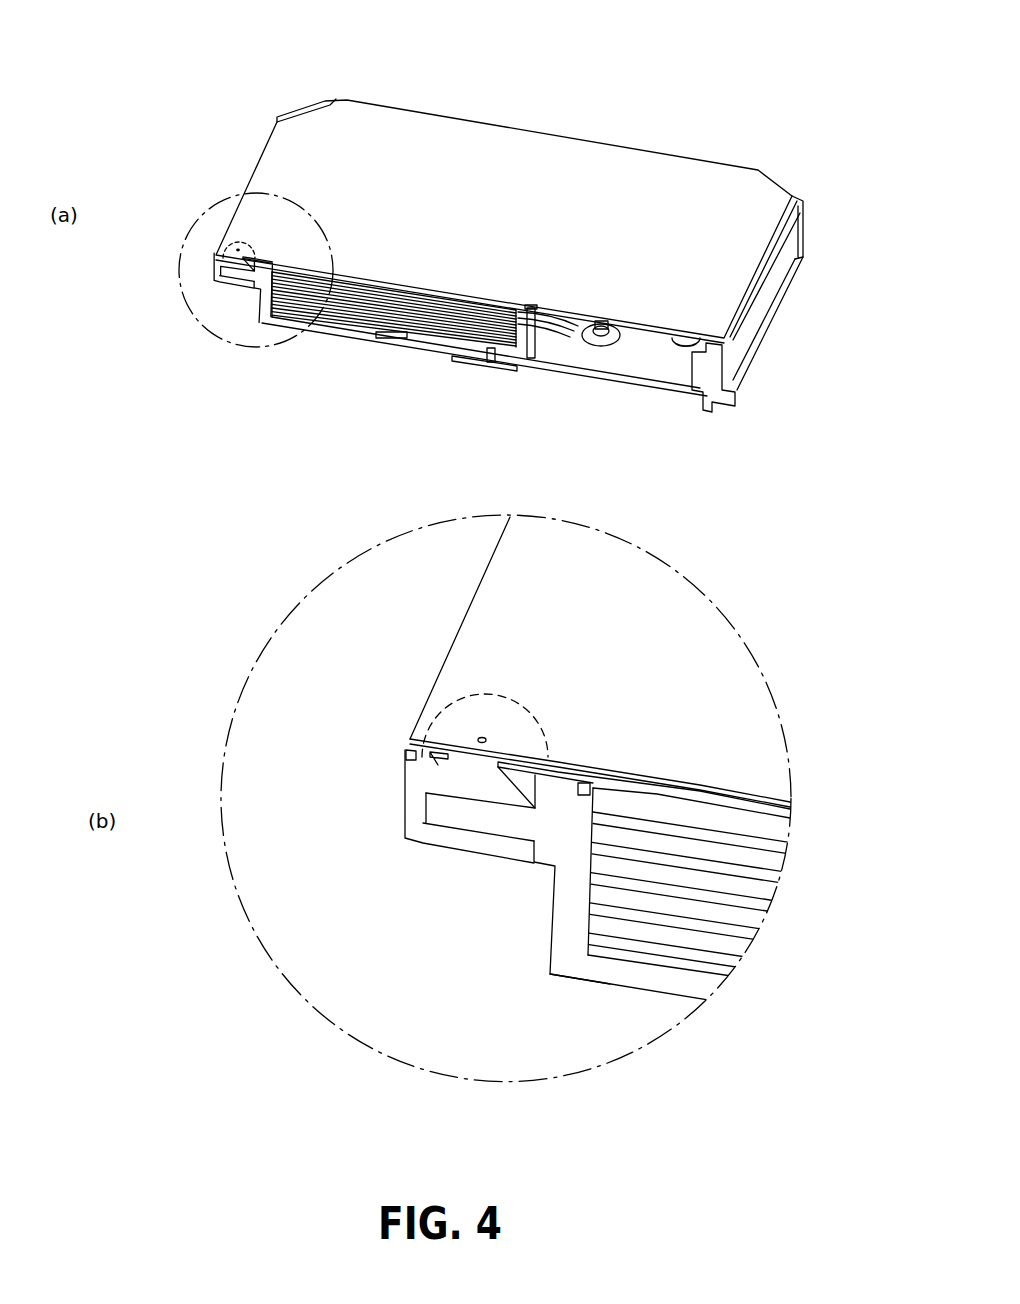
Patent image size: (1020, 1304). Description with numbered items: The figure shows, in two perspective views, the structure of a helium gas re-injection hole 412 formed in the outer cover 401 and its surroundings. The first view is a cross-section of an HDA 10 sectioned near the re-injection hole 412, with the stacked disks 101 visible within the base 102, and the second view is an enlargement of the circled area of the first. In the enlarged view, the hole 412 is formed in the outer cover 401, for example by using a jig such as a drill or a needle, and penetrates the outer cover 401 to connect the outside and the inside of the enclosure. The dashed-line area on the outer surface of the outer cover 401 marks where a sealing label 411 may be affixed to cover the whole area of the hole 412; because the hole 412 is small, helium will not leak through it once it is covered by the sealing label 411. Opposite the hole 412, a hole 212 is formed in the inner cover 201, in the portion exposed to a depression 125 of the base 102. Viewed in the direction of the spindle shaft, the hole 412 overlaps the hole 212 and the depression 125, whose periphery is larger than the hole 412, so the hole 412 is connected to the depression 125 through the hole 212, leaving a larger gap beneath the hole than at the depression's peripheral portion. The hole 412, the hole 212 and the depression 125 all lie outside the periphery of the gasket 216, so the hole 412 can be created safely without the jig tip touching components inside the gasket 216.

The HDA 10 is at (556, 153).
The magnetic recording disks 101 is at (730, 837).
The base 102 is at (541, 917).
The depression 125 is at (466, 788).
The inner cover 201 is at (421, 768).
The hole of the inner cover 212 is at (491, 772).
The gasket 216 is at (604, 781).
The outer cover 401 is at (472, 606).
The sealing label 411 is at (547, 722).
The helium gas re-injection hole 412 is at (480, 739).